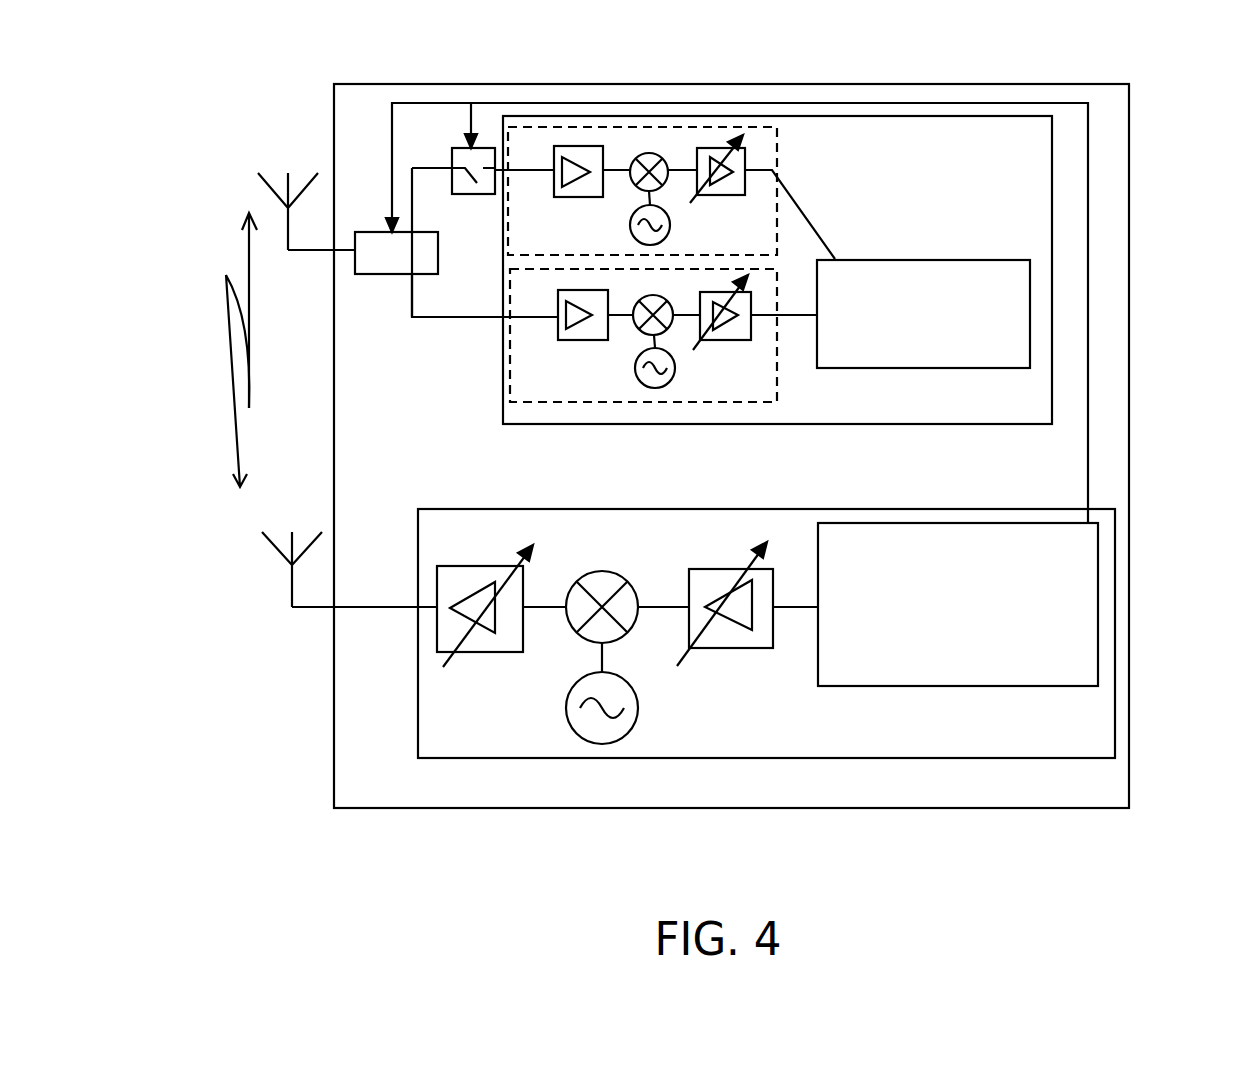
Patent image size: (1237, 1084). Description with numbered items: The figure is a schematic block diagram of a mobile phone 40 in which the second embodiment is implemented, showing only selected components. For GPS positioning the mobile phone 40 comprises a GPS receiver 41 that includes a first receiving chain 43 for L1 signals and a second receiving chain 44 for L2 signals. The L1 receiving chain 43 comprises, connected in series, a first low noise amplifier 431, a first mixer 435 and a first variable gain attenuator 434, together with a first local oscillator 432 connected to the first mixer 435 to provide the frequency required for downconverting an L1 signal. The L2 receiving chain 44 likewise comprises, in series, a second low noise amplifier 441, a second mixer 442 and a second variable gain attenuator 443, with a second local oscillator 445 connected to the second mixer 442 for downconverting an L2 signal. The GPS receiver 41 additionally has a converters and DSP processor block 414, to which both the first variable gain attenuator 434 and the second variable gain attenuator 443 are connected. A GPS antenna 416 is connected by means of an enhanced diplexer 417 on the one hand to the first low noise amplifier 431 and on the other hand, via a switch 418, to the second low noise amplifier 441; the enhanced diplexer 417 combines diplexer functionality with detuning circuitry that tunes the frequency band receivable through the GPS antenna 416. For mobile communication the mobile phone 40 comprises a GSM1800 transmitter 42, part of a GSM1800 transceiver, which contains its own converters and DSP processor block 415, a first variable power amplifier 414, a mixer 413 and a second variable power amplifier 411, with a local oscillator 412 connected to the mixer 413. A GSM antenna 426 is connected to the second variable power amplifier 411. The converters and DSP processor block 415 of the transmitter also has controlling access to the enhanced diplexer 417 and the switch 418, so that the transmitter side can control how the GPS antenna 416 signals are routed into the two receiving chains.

The mobile phone 40 is at (1110, 418).
The GPS receiver 41 is at (1040, 208).
The GSM1800 transmitter 42 is at (1103, 557).
The first receiving chain 43 is at (762, 340).
The second receiving chain 44 is at (760, 150).
The second variable power amplifier 411 is at (480, 638).
The local oscillator 412 is at (607, 730).
The mixer 413 is at (622, 628).
The converters and DSP processor block 414 is at (913, 272).
The converters and DSP processor block 415 is at (858, 673).
The GPS antenna 416 is at (268, 177).
The enhanced diplexer 417 is at (367, 237).
The switch 418 is at (458, 155).
The GSM antenna 426 is at (260, 532).
The first low noise amplifier 431 is at (595, 328).
The first local oscillator 432 is at (657, 375).
The first variable gain attenuator 434 is at (723, 330).
The first mixer 435 is at (663, 322).
The second low noise amplifier 441 is at (587, 158).
The second mixer 442 is at (649, 158).
The second variable gain attenuator 443 is at (718, 150).
The second local oscillator 445 is at (661, 216).